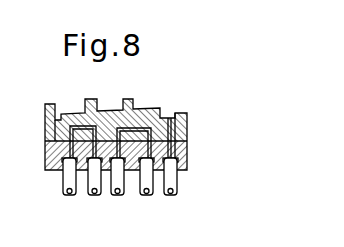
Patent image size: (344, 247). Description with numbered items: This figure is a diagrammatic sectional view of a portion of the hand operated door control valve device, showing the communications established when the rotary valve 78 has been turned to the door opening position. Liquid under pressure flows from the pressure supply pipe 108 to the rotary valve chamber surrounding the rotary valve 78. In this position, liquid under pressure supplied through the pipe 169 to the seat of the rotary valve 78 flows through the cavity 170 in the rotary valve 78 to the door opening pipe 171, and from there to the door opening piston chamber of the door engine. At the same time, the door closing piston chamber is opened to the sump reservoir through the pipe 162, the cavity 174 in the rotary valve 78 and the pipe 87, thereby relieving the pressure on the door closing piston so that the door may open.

The rotary valve 78 is at (169, 129).
The cavity 174 is at (80, 126).
The cavity 170 is at (143, 125).
The pipe 162 is at (66, 184).
The pipe 87 is at (104, 196).
The passage and pipe 169 is at (122, 196).
The door opening pipe 171 is at (149, 196).
The pressure supply pipe 108 is at (171, 175).